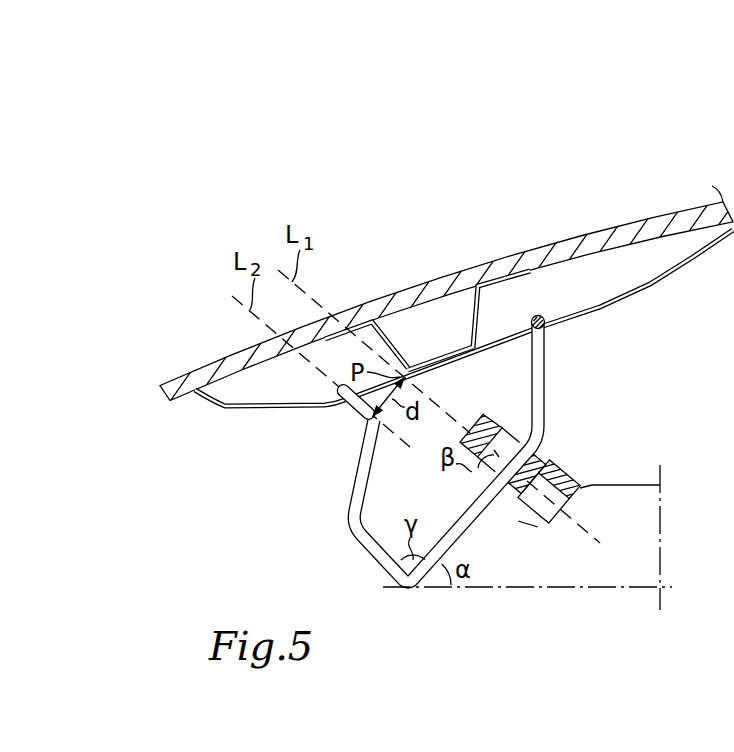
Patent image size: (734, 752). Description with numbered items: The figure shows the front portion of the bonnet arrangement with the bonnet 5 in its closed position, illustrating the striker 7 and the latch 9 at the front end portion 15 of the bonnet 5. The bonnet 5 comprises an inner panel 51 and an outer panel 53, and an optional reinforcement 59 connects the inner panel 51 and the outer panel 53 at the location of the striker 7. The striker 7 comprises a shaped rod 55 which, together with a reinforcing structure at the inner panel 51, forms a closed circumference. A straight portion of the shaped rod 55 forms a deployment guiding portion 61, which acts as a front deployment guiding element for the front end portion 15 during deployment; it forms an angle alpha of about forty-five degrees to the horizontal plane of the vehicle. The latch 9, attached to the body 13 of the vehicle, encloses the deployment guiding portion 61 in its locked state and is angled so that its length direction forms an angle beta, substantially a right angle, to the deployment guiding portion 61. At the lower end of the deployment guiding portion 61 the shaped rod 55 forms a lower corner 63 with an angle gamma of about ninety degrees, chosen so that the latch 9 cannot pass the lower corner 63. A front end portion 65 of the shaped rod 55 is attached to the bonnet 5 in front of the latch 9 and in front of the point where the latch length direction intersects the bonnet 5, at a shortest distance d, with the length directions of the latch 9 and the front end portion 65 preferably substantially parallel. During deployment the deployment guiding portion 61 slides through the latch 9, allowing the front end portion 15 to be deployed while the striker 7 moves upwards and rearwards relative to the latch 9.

The bonnet 5 is at (596, 222).
The striker 7 is at (557, 382).
The latch 9 is at (551, 461).
The body 13 is at (644, 532).
The front end portion 15 is at (226, 334).
The inner panel 51 is at (267, 412).
The outer panel 53 is at (400, 297).
The shaped rod 55 is at (357, 481).
The reinforcement 59 is at (405, 343).
The deployment guiding portion 61 is at (472, 522).
The lower corner 63 is at (407, 588).
The front end portion 65 is at (348, 418).